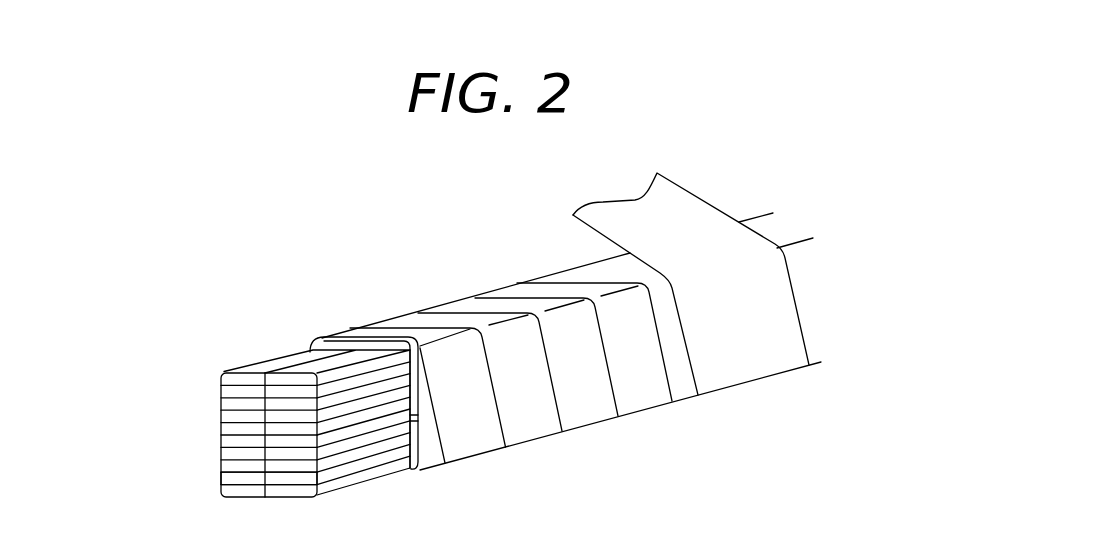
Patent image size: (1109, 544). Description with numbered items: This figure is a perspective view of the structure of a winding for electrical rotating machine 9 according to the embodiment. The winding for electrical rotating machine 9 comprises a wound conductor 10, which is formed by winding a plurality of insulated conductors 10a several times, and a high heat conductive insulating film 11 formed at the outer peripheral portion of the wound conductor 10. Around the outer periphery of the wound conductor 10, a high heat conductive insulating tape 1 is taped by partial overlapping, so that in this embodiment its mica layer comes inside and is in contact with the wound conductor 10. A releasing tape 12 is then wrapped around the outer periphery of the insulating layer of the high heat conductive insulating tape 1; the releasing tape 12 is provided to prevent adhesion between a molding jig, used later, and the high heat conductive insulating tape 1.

The high heat conductive insulating tape 1 is at (585, 402).
The winding for electrical rotating machine 9 is at (410, 317).
The wound conductor 10 is at (220, 405).
The insulated conductor 10a is at (230, 478).
The high heat conductive insulating film 11 is at (415, 442).
The releasing tape 12 is at (740, 358).